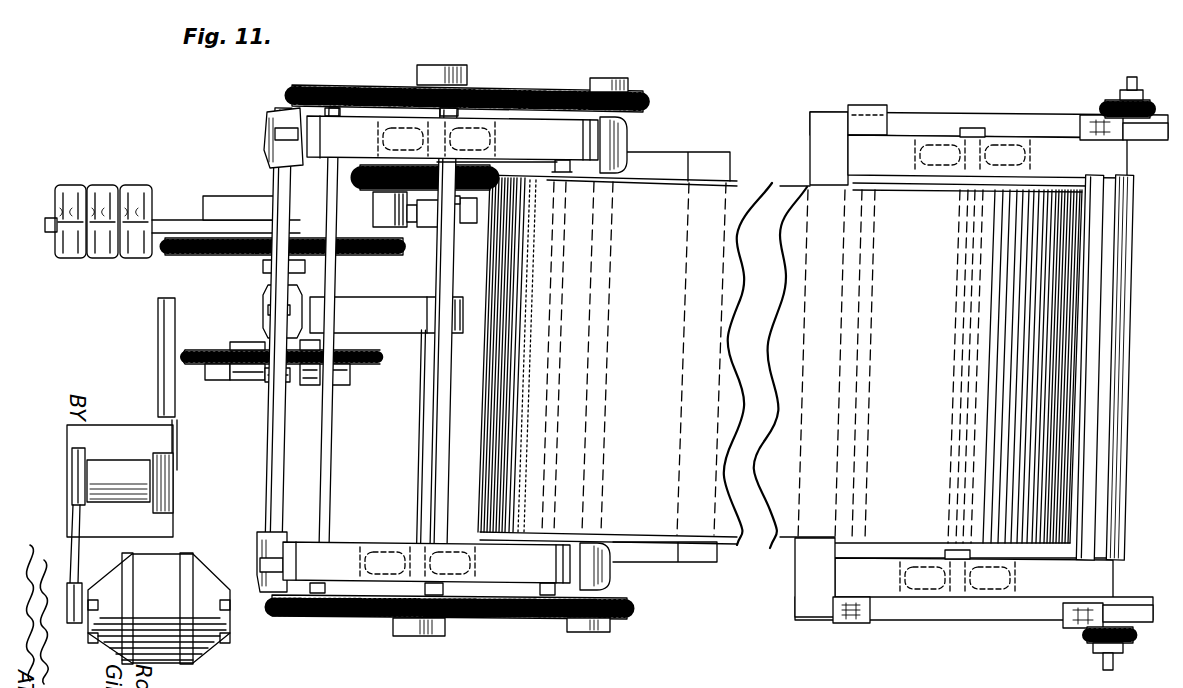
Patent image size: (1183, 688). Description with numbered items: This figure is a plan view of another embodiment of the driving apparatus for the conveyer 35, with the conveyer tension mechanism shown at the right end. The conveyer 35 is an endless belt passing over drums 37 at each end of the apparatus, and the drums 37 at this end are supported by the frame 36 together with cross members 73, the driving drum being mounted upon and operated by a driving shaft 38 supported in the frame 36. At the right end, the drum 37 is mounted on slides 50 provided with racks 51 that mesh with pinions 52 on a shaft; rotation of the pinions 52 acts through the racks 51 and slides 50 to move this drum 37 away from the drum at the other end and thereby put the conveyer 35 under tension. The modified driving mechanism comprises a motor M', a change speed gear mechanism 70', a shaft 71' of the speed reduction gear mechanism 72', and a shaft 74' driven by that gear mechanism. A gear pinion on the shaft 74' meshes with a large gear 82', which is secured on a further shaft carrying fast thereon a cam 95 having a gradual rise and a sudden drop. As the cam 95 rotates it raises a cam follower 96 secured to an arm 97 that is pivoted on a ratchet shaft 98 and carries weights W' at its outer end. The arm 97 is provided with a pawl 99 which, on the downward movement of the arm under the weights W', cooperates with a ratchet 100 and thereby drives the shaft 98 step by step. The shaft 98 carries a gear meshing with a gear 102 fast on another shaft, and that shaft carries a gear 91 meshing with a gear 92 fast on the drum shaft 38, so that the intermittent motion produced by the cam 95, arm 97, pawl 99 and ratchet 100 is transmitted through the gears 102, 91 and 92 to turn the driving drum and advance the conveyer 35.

The gear 91 is at (393, 67).
The gear 92 is at (646, 102).
The cross bar 73 is at (442, 351).
The drum 37 is at (643, 197).
The conveyer 35 is at (777, 162).
The slide 50 is at (1033, 127).
The pinion 52 is at (1105, 108).
The frame 36 is at (698, 553).
The rack 51 is at (1157, 145).
The cam 95 is at (213, 193).
The shaft 74' is at (256, 328).
The cam follower 96 is at (312, 197).
The arm 97 is at (190, 213).
The pawl 99 is at (373, 205).
The gear 102 is at (477, 195).
The ratchet 100 is at (480, 213).
The large gear 82' is at (284, 265).
The shaft 71' is at (269, 384).
The speed reduction gear mechanism 72' is at (277, 378).
The change speed gear mechanism 70' is at (120, 524).
The ratchet shaft 98 is at (415, 462).
The driving shaft 38 is at (607, 473).
The weights W' is at (98, 205).
The motor M' is at (159, 608).